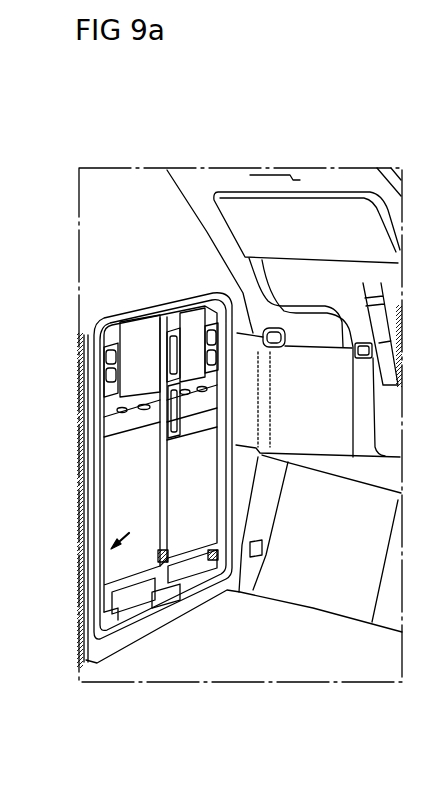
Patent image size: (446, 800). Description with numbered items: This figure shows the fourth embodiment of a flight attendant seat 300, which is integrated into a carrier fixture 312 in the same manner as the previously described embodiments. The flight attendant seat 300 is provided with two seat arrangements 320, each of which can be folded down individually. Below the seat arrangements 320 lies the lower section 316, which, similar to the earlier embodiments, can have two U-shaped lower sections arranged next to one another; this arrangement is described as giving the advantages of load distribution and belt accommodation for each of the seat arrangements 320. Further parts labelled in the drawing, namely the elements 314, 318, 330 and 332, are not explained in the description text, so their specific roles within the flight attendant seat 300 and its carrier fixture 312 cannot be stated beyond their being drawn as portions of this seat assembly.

The flight attendant seat 300 is at (120, 294).
The carrier fixture 312 is at (107, 180).
The bottom wall 314 is at (97, 640).
The lower section 316 is at (227, 603).
The side wall 318 is at (97, 513).
The seat arrangement 320 is at (177, 303).
The latch element 330 is at (187, 603).
The latch element 332 is at (160, 607).